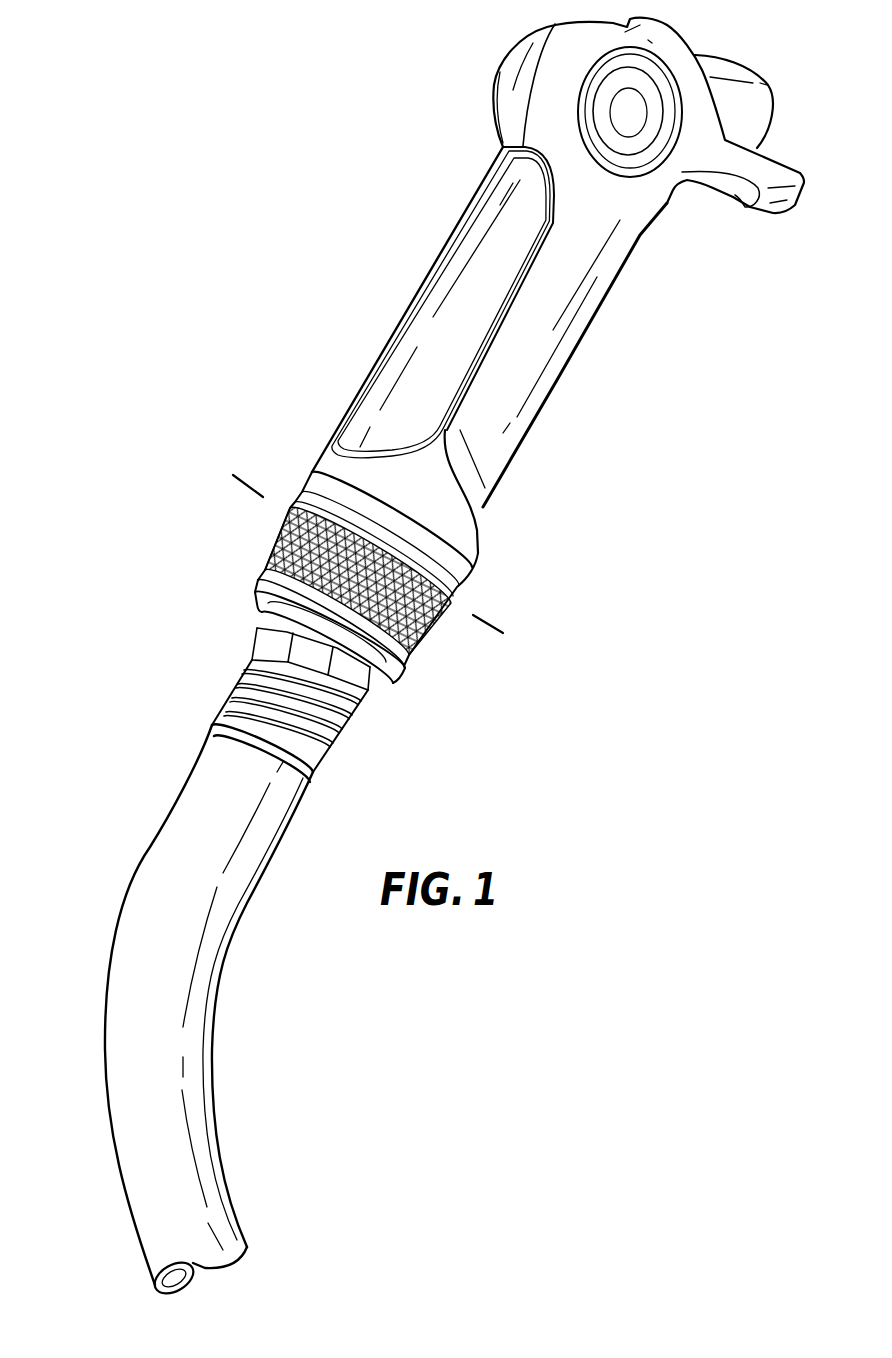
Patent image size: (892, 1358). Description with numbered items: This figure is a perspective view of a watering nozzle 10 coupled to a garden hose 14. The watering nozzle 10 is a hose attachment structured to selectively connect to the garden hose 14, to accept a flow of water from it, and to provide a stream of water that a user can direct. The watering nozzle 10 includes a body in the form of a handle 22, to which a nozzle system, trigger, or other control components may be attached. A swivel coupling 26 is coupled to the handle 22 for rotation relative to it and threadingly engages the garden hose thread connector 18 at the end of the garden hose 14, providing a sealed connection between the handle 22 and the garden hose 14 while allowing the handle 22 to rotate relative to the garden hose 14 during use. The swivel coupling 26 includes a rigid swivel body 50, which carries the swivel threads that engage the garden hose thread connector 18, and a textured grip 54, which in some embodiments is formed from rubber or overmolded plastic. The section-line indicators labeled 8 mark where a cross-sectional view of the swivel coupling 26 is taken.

The watering nozzle 10 is at (328, 206).
The handle 22 is at (523, 363).
The swivel coupling 26 is at (285, 535).
The textured grip 54 is at (437, 627).
The rigid swivel body 50 is at (397, 664).
The garden hose thread connector 18 is at (250, 685).
The garden hose 14 is at (160, 860).
The section line 8- 8 is at (251, 476).